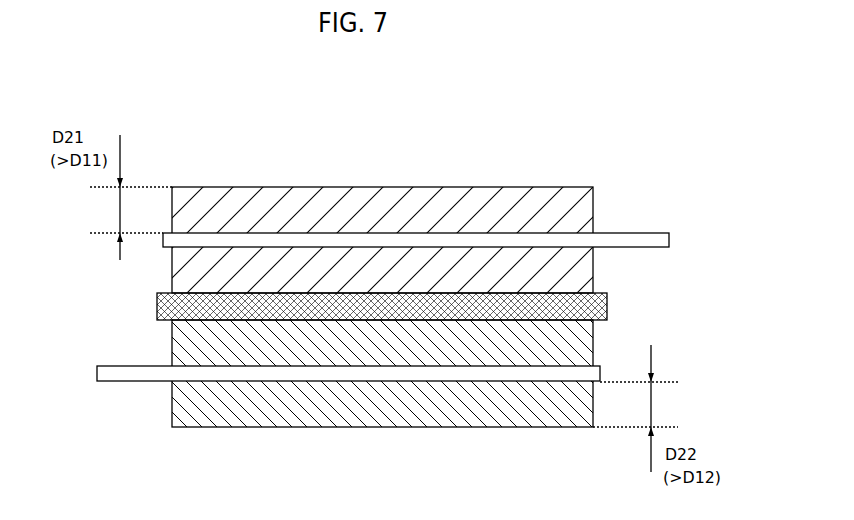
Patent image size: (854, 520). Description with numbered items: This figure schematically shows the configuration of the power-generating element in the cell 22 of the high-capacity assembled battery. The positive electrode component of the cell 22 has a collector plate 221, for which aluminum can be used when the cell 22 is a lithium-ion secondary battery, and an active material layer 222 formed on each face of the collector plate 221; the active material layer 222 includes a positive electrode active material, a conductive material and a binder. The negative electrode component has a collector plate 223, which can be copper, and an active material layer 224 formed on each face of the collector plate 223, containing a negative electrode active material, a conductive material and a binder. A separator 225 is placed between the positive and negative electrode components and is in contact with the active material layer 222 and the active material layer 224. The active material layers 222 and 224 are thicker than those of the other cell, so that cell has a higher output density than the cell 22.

The cell 22 is at (702, 186).
The collector plate 221 is at (632, 240).
The active material layer 222 is at (360, 275).
The collector plate 223 is at (137, 373).
The active material layer 224 is at (435, 340).
The separator 225 is at (608, 305).